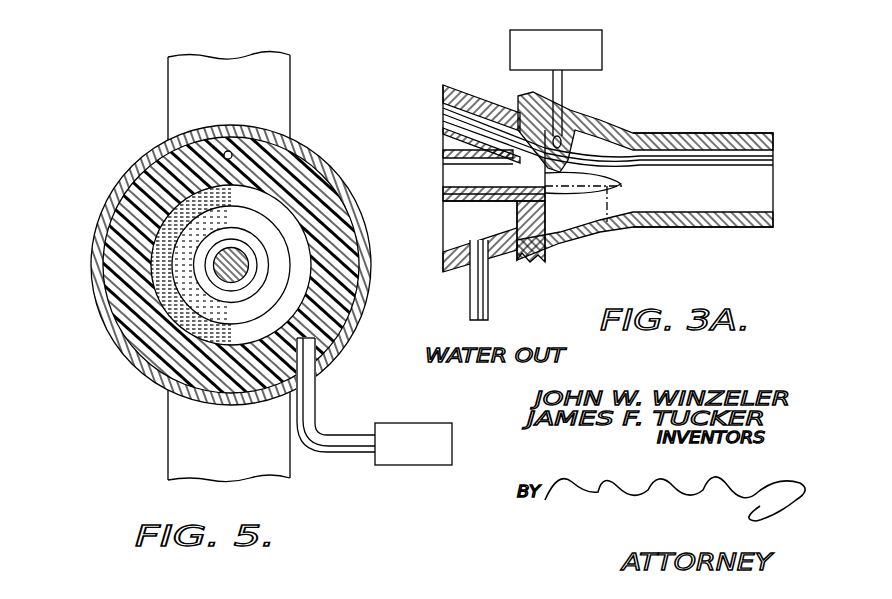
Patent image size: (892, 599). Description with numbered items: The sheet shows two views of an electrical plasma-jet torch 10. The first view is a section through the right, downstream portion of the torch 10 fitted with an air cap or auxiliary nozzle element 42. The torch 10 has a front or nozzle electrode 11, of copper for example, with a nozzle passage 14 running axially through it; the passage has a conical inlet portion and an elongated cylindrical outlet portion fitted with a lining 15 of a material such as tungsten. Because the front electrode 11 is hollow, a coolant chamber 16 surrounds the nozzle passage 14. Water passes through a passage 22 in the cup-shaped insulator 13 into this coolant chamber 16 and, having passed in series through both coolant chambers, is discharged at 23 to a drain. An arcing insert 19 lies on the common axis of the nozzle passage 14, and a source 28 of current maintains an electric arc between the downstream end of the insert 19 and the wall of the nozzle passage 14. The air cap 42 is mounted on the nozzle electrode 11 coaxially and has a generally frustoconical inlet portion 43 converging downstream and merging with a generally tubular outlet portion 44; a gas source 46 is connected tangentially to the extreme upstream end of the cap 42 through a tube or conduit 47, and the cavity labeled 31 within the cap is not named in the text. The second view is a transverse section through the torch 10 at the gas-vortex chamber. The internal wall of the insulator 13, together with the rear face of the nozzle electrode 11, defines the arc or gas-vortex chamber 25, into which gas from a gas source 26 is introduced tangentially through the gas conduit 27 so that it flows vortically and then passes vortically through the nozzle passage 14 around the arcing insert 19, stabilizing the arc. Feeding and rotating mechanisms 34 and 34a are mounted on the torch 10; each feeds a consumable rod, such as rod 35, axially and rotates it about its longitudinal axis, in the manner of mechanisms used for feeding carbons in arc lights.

In FIG. 3A, the electrical plasma-jet torch 10 is at (462, 80).
In FIG. 5, the front or nozzle electrode 11 is at (93, 255).
In FIG. 3A, the front or nozzle electrode 11 is at (498, 252).
In FIG. 5, the cup-shaped insulator 13 is at (130, 217).
In FIG. 3A, the nozzle passage 14 is at (503, 173).
In FIG. 3A, the lining 15 is at (452, 168).
In FIG. 3A, the coolant chamber 16 is at (443, 243).
In FIG. 5, the arcing insert 19 is at (236, 256).
In FIG. 5, the passage 22 is at (229, 150).
In FIG. 3A, the water discharge 23 is at (470, 304).
In FIG. 5, the arc or gas-vortex chamber 25 is at (178, 314).
In FIG. 5, the gas source 26 is at (437, 466).
In FIG. 5, the gas conduit 27 is at (316, 400).
In FIG. 3A, the source of current 28 is at (392, 3).
In FIG. 3A, the mixing chamber 31 is at (615, 214).
In FIG. 5, the feeding and rotating mechanism 34 is at (168, 90).
In FIG. 5, the feeding and rotating mechanism 34a is at (168, 477).
In FIG. 3A, the consumable rod 35 is at (452, 122).
In FIG. 3A, the air cap or auxiliary nozzle element 42 is at (728, 132).
In FIG. 3A, the frustoconical inlet portion 43 is at (583, 120).
In FIG. 3A, the tubular outlet portion 44 is at (756, 224).
In FIG. 3A, the gas source 46 is at (590, 30).
In FIG. 3A, the tube or conduit 47 is at (566, 86).